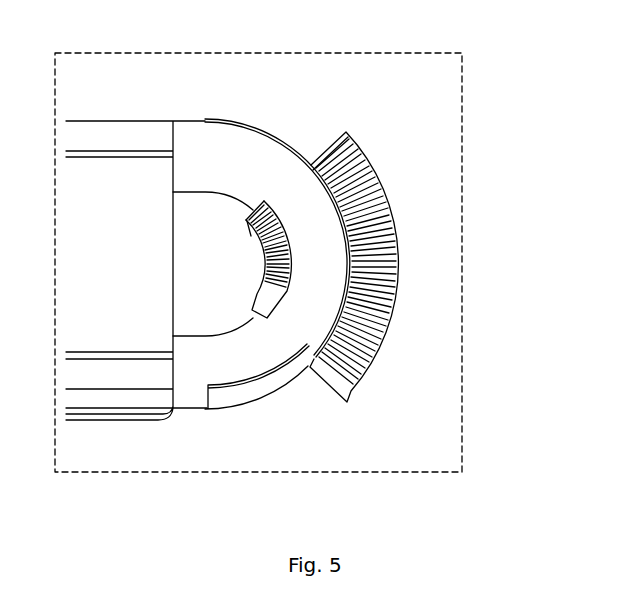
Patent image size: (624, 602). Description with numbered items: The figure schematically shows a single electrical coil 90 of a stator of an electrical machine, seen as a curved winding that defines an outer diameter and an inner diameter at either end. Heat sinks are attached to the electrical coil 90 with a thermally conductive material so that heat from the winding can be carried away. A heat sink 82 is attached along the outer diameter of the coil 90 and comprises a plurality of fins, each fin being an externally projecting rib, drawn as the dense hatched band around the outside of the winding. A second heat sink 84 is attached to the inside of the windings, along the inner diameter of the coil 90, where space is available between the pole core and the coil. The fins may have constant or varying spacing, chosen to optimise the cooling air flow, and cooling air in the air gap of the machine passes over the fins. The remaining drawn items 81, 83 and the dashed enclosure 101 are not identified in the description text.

The brush assembly 101 is at (293, 262).
The electrical coil 90 is at (195, 128).
The brush carrier shell 81 is at (300, 195).
The heat sink 82 is at (398, 270).
The inner brush bristles 83 is at (279, 300).
The heat sink 84 is at (259, 197).